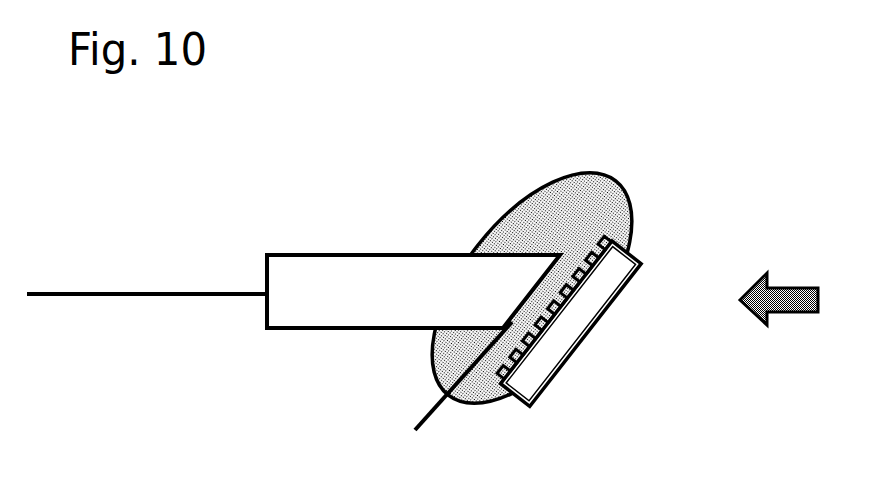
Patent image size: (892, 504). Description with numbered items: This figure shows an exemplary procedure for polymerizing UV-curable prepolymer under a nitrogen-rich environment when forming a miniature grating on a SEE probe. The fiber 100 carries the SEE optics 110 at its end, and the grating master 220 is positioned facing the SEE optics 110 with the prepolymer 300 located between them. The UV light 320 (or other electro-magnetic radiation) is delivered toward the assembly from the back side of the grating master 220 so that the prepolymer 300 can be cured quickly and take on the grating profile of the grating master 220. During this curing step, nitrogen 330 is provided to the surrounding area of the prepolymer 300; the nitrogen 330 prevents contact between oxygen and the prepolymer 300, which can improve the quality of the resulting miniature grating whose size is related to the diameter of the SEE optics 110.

The fiber 100 is at (147, 267).
The SEE optics 110 is at (413, 268).
The grating master 220 is at (586, 320).
The prepolymer 300 is at (436, 395).
The UV light 320 is at (796, 284).
The nitrogen 330 is at (532, 287).